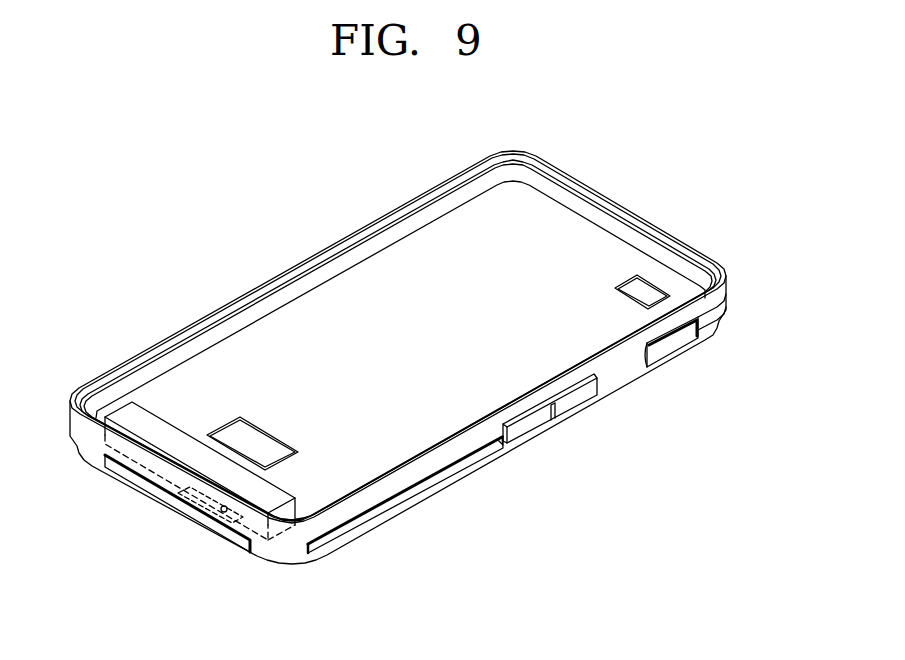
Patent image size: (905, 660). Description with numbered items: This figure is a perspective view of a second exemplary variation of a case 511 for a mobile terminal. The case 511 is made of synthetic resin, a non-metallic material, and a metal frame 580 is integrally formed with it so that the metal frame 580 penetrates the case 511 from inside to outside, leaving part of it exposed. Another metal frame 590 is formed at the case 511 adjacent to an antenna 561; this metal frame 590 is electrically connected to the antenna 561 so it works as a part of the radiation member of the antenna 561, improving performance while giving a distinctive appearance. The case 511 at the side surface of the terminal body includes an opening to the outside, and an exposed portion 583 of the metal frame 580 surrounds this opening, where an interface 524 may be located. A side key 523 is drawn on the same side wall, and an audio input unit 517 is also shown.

The case 511 is at (718, 292).
The exposed portion 583 is at (698, 328).
The interface 524 is at (680, 343).
The side button 523 is at (532, 428).
The metal frame 580 is at (365, 517).
The metal frame 590 is at (128, 482).
The antenna 561 is at (213, 467).
The audio input unit 517 is at (223, 512).